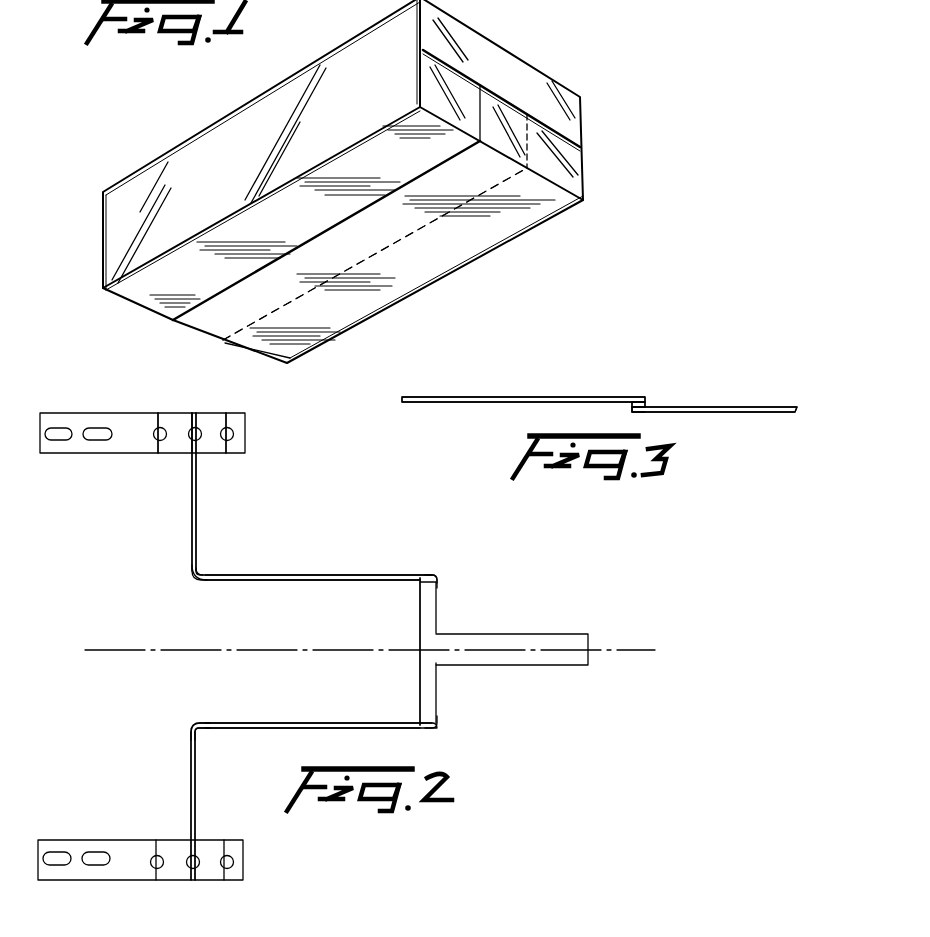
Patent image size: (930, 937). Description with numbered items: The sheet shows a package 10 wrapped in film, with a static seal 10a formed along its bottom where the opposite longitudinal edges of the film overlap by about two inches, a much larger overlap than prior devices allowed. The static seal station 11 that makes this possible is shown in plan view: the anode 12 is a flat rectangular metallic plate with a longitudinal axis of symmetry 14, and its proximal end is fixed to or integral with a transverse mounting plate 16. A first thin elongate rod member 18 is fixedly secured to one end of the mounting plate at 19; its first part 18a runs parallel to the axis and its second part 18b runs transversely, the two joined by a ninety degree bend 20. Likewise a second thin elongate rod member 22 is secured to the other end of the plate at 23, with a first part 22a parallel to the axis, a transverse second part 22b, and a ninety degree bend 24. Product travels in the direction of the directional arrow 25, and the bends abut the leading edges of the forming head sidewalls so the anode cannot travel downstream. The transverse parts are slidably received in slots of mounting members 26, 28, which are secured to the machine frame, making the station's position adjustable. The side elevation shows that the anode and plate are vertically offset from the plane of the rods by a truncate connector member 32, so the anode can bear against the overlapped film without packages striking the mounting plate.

In FIG. 1, the package 10 is at (566, 68).
In FIG. 1, the static seal 10a is at (405, 218).
In FIG. 3, the static seal station 11 is at (649, 382).
In FIG. 2, the static seal station 11 is at (322, 530).
In FIG. 3, the anode 12 is at (737, 407).
In FIG. 2, the anode 12 is at (527, 640).
In FIG. 2, the longitudinal axis of symmetry 14 is at (96, 648).
In FIG. 3, the mounting plate 16 is at (637, 412).
In FIG. 2, the mounting plate 16 is at (432, 693).
In FIG. 2, the first thin elongate rod member 18 is at (338, 720).
In FIG. 2, the first part of first rod 18a is at (265, 728).
In FIG. 2, the second part of first rod 18b is at (188, 777).
In FIG. 2, the securing point of first rod 19 is at (432, 730).
In FIG. 2, the ninety degree bend 20 is at (190, 722).
In FIG. 3, the second thin elongate rod member 22 is at (530, 397).
In FIG. 2, the second thin elongate rod member 22 is at (238, 590).
In FIG. 2, the first part of second rod 22a is at (307, 575).
In FIG. 2, the second part of second rod 22b is at (197, 510).
In FIG. 2, the securing point of second rod 23 is at (416, 575).
In FIG. 2, the ninety degree bend 24 is at (200, 570).
In FIG. 2, the directional arrow / slot 25 is at (226, 413).
In FIG. 2, the mounting member 26 is at (123, 842).
In FIG. 2, the mounting member 28 is at (130, 447).
In FIG. 3, the truncate connector member 32 is at (630, 406).